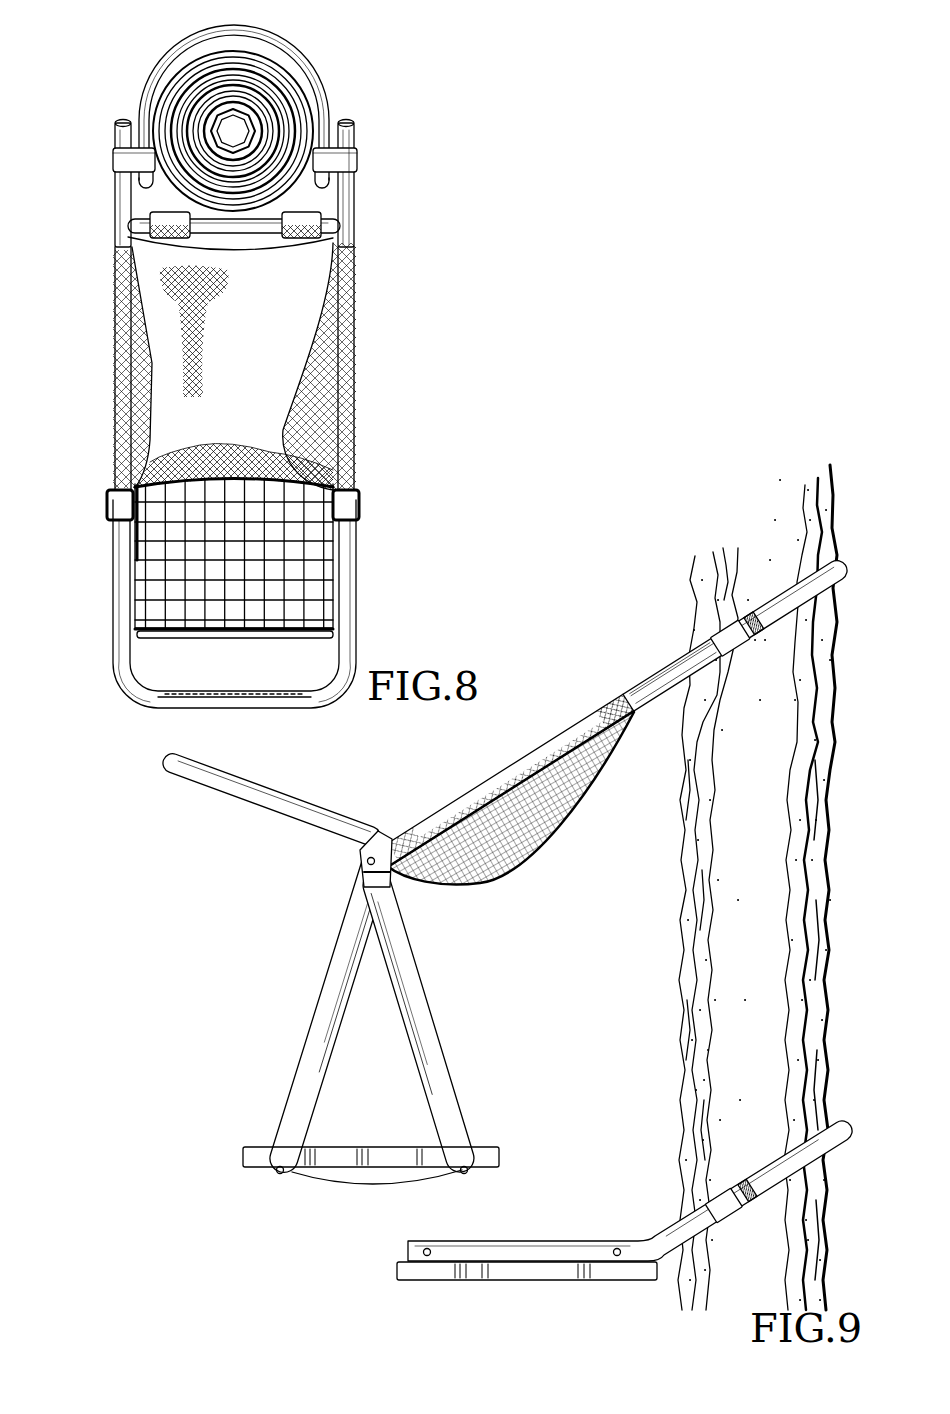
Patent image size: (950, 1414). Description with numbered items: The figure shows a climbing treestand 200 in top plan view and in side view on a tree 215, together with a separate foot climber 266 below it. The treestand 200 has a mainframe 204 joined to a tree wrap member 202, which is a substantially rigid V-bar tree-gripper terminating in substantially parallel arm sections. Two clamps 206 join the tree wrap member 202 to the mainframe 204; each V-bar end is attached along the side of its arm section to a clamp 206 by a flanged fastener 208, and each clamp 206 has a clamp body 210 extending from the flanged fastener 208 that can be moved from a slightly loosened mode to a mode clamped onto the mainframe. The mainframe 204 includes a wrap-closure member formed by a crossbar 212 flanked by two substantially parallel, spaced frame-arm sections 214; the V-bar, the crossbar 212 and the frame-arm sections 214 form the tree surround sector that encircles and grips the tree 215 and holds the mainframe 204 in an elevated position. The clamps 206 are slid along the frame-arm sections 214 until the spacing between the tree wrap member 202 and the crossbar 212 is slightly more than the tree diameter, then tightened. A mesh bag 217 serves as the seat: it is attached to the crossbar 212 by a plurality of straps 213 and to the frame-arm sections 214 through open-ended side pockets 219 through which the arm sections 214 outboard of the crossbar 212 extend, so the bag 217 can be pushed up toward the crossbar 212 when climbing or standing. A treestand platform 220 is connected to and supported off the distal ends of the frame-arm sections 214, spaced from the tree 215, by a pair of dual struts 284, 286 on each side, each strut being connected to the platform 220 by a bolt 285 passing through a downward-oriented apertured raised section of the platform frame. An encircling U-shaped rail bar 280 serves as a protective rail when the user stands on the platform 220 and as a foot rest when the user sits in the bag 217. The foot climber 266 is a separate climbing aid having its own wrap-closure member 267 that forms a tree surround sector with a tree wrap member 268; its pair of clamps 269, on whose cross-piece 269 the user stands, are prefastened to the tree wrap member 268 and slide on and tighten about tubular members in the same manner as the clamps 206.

In FIG. 8, the treestand 200 is at (150, 50).
In FIG. 9, the treestand 200 is at (578, 690).
In FIG. 8, the tree wrap member 202 is at (307, 63).
In FIG. 9, the tree wrap member 202 is at (767, 605).
In FIG. 8, the mainframe 204 is at (372, 176).
In FIG. 9, the mainframe 204 is at (683, 637).
In FIG. 8, the clamp 206 is at (102, 160).
In FIG. 9, the clamp 206 is at (737, 620).
In FIG. 8, the flanged fastener 208 is at (142, 133).
In FIG. 8, the clamp body 210 is at (125, 157).
In FIG. 8, the crossbar 212 is at (263, 225).
In FIG. 8, the straps 213 is at (158, 238).
In FIG. 8, the frame-arm sections 214 is at (122, 207).
In FIG. 9, the frame-arm sections 214 is at (668, 670).
In FIG. 8, the tree 215 is at (272, 63).
In FIG. 9, the tree 215 is at (705, 910).
In FIG. 8, the mesh bag 217 is at (157, 325).
In FIG. 9, the mesh bag 217 is at (483, 857).
In FIG. 8, the side pockets 219 is at (122, 292).
In FIG. 9, the side pockets 219 is at (475, 790).
In FIG. 8, the treestand platform 220 is at (135, 588).
In FIG. 9, the treestand platform 220 is at (262, 1150).
In FIG. 9, the foot climber 266 is at (636, 1233).
In FIG. 9, the wrap-closure member 267 is at (407, 1268).
In FIG. 9, the tree wrap member 268 is at (778, 1165).
In FIG. 9, the cross-piece / clamps 269 is at (713, 1200).
In FIG. 8, the U-shaped rail bar 280 is at (122, 625).
In FIG. 9, the U-shaped rail bar 280 is at (325, 815).
In FIG. 9, the strut 284 is at (305, 1092).
In FIG. 9, the bolt 285 is at (352, 1185).
In FIG. 9, the strut 286 is at (413, 985).